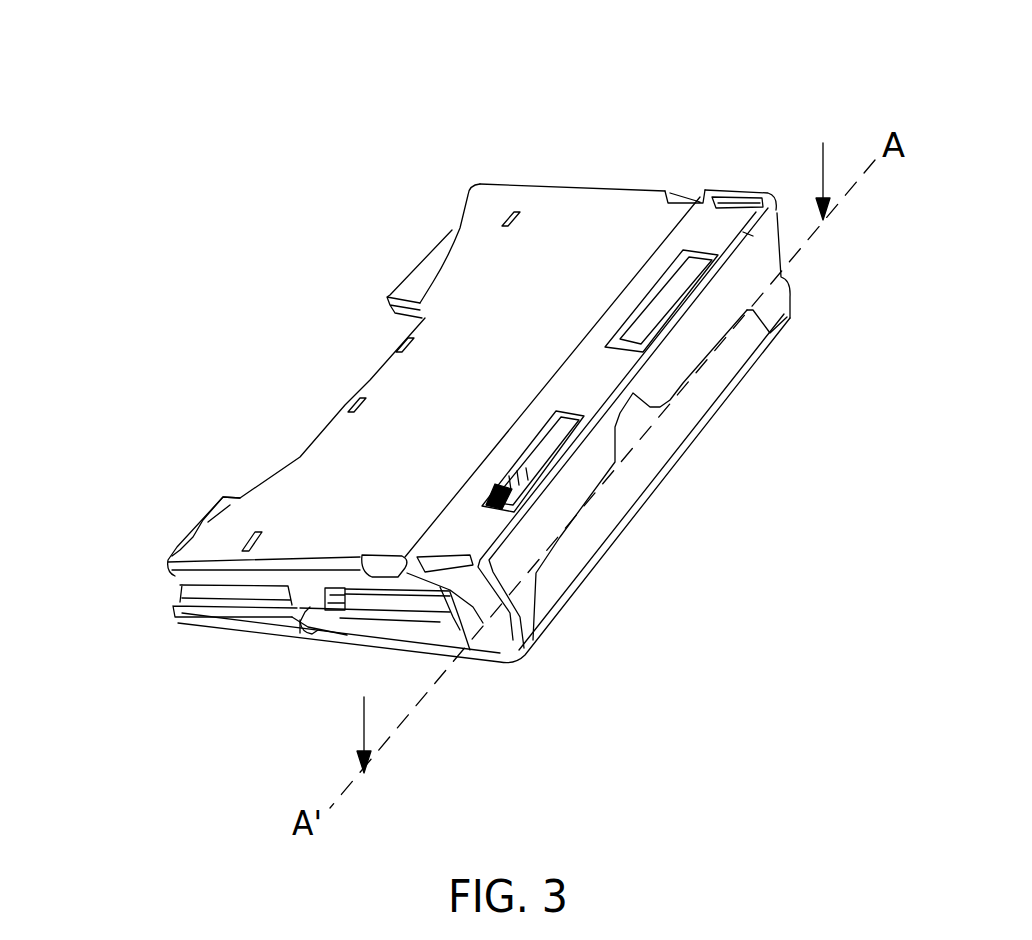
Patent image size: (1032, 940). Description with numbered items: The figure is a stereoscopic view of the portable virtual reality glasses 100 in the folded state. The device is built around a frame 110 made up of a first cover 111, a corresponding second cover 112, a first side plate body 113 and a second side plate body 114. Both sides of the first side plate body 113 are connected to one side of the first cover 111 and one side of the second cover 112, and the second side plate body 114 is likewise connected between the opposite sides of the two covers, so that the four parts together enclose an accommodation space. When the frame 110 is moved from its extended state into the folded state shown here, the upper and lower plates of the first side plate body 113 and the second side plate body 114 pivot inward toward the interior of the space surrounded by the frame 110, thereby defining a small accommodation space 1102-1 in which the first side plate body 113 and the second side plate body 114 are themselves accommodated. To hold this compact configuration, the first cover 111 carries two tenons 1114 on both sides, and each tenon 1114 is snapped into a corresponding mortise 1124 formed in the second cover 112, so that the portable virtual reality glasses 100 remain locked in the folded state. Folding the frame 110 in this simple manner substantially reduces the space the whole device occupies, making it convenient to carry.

The portable virtual reality glasses 100 is at (200, 50).
The frame 110 is at (580, 172).
The first cover 111 is at (365, 478).
The second cover 112 is at (618, 523).
The first side plate body 113 is at (443, 238).
The second side plate body 114 is at (205, 519).
The small accommodation space 1102-1 is at (360, 375).
The tenon 1114 is at (310, 607).
The mortise 1124 is at (310, 622).